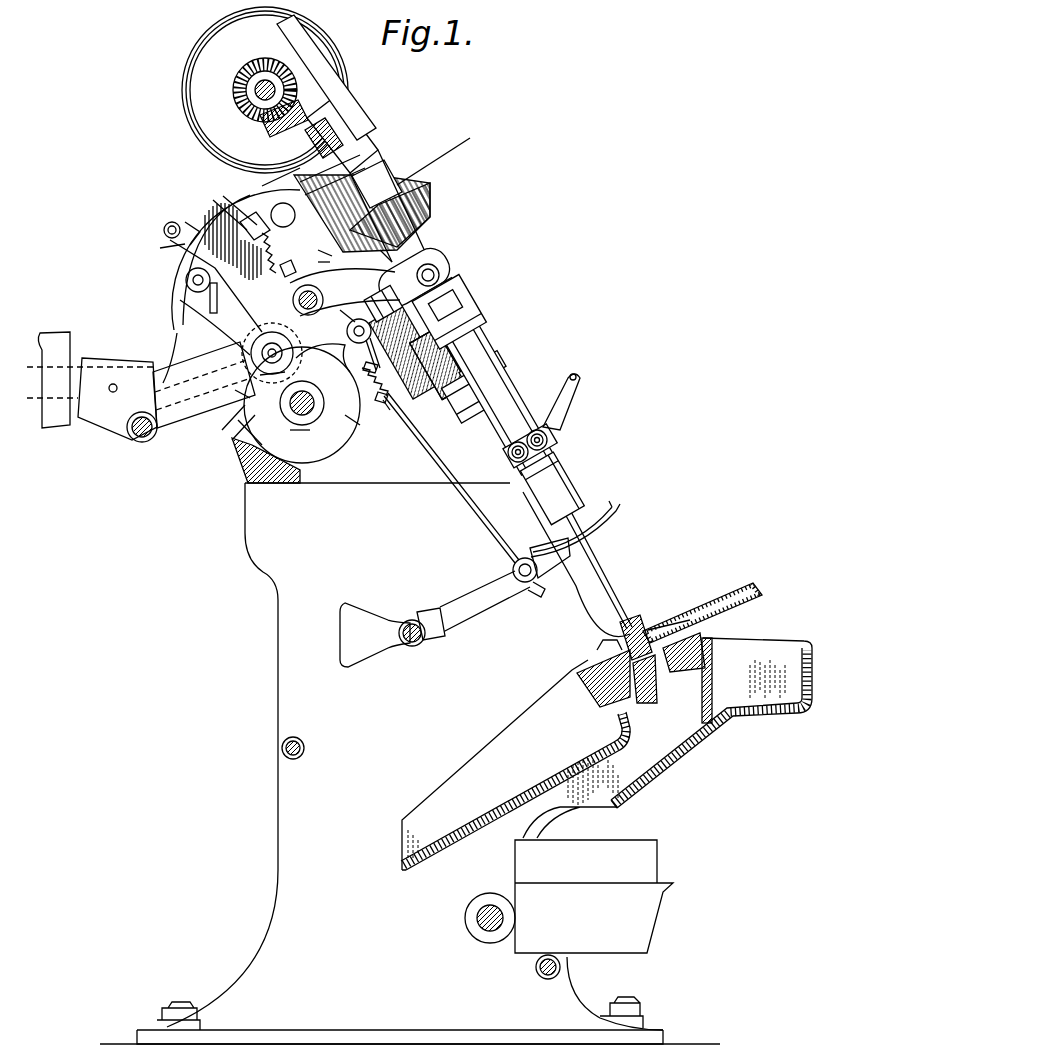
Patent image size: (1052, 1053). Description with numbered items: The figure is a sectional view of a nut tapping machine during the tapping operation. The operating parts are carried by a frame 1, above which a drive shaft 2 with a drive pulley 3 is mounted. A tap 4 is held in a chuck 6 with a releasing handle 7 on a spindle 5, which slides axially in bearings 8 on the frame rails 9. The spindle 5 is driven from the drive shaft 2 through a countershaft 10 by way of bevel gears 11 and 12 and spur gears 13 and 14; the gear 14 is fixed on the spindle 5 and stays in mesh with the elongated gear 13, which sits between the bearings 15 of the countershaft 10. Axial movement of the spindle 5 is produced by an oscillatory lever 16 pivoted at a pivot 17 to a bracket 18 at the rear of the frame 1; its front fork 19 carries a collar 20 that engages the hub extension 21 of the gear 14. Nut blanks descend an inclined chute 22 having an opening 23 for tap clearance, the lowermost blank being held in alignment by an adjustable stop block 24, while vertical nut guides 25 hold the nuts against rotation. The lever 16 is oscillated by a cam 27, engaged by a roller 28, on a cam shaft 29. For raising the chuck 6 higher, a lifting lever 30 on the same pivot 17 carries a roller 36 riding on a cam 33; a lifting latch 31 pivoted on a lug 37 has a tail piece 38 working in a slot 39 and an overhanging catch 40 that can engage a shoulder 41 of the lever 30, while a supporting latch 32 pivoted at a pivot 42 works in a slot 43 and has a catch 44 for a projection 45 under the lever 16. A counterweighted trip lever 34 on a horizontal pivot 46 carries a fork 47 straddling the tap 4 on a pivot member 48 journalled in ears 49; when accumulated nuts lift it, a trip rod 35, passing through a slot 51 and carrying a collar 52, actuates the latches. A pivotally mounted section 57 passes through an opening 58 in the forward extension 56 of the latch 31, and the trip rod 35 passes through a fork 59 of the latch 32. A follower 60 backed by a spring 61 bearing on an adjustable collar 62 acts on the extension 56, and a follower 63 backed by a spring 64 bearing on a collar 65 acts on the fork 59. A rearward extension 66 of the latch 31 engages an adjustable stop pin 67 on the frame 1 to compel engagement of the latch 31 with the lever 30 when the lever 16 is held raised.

The frame 1 is at (284, 612).
The drive shaft 2 is at (256, 104).
The drive pulley 3 is at (197, 97).
The tap 4 is at (607, 590).
The spindle 5 is at (450, 300).
The chuck 6 is at (563, 475).
The releasing handle 7 is at (125, 340).
The bearings 8 is at (358, 162).
The frame rails 9 is at (452, 390).
The countershaft 10 is at (452, 318).
The bevel gear 11 is at (266, 91).
The bevel gear 12 is at (266, 130).
The spur gear 13 is at (352, 188).
The spur gear 14 is at (438, 200).
The bearings 15 is at (340, 125).
The oscillatory lever 16 is at (175, 340).
The pivot 17 is at (139, 442).
The bracket 18 is at (183, 438).
The fork 19 is at (430, 252).
The collar 20 is at (440, 272).
The hub extension 21 is at (425, 240).
The inclined chute 22 is at (757, 590).
The opening 23 is at (628, 700).
The adjustable stop block 24 is at (607, 700).
The vertical nut guides 25 is at (640, 630).
The cam 27 is at (248, 482).
The roller 28 is at (290, 342).
The cam shaft 29 is at (302, 420).
The lifting lever 30 is at (227, 440).
The lifting latch 31 is at (228, 290).
The supporting latch 32 is at (313, 256).
The cam 33 is at (353, 420).
The trip lever 34 is at (470, 612).
The trip rod 35 is at (473, 504).
The roller 36 is at (292, 350).
The lug 37 is at (193, 307).
The tail piece 38 is at (233, 438).
The slot 39 is at (238, 403).
The overhanging catch 40 is at (236, 325).
The shoulder 41 is at (268, 332).
The pivot 42 is at (318, 402).
The slot 43 is at (348, 327).
The catch 44 is at (316, 245).
The projection 45 is at (378, 315).
The horizontal pivot 46 is at (412, 646).
The fork 47 is at (611, 504).
The pivot member 48 is at (520, 590).
The ears 49 is at (524, 558).
The slot 51 is at (330, 323).
The collar 52 is at (312, 287).
The forward extension 56 is at (286, 210).
The pivotally mounted section 57 is at (228, 213).
The opening 58 is at (190, 225).
The fork 59 is at (312, 358).
The follower 60 is at (282, 215).
The spring 61 is at (280, 250).
The collar 62 is at (295, 237).
The follower 63 is at (373, 390).
The spring 64 is at (380, 380).
The collar 65 is at (383, 412).
The rearward extension 66 is at (172, 248).
The stop pin 67 is at (164, 231).